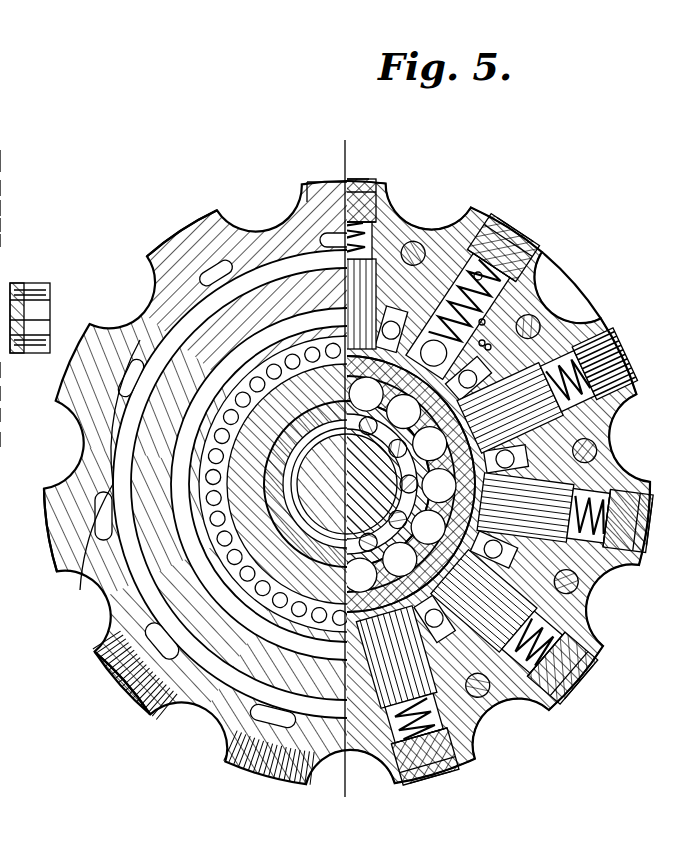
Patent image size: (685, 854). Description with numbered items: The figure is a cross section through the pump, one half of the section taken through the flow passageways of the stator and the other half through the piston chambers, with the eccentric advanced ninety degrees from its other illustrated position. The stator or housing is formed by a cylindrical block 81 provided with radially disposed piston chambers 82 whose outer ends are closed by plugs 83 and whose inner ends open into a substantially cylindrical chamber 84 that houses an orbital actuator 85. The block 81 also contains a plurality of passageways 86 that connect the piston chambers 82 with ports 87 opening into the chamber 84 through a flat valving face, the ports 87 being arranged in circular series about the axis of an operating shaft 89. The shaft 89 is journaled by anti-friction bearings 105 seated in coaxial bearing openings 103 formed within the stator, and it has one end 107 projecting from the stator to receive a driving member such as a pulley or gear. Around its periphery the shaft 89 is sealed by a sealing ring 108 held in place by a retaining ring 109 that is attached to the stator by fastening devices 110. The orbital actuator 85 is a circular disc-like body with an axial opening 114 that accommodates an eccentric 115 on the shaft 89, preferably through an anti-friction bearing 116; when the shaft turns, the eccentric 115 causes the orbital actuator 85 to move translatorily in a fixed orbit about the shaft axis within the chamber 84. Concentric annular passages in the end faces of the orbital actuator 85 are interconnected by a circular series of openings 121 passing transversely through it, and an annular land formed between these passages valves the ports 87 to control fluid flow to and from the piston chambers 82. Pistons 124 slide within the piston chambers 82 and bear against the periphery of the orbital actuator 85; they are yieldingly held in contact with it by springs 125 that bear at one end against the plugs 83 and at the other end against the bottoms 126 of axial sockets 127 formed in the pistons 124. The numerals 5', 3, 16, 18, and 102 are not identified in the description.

The shaft 5' is at (8, 162).
The gear 3 is at (3, 188).
The housing 16 is at (9, 207).
The bearing opening 103 is at (14, 224).
The anti-friction bearing 105 is at (50, 430).
The operating shaft 89 is at (366, 196).
The shaft end 107 is at (44, 292).
The sealing ring 108 is at (14, 370).
The retaining ring 109 is at (16, 393).
The fastening devices 110 is at (15, 414).
The bearing 18 is at (10, 439).
The passageways 86 is at (155, 296).
The ports 87 is at (250, 505).
The eccentric 115 is at (347, 509).
The cylindrical block 81 is at (86, 572).
The axial opening 114 is at (102, 683).
The anti-friction bearing 116 is at (362, 400).
The plugs 83 is at (492, 232).
The springs 125 is at (478, 276).
The piston chambers 82 is at (508, 273).
The axial sockets 127 is at (482, 343).
The bore 102 is at (482, 322).
The socket bottoms 126 is at (488, 347).
The openings 121 is at (560, 408).
The orbital actuator 85 is at (600, 446).
The pistons 124 is at (475, 502).
The cylindrical chamber 84 is at (585, 578).